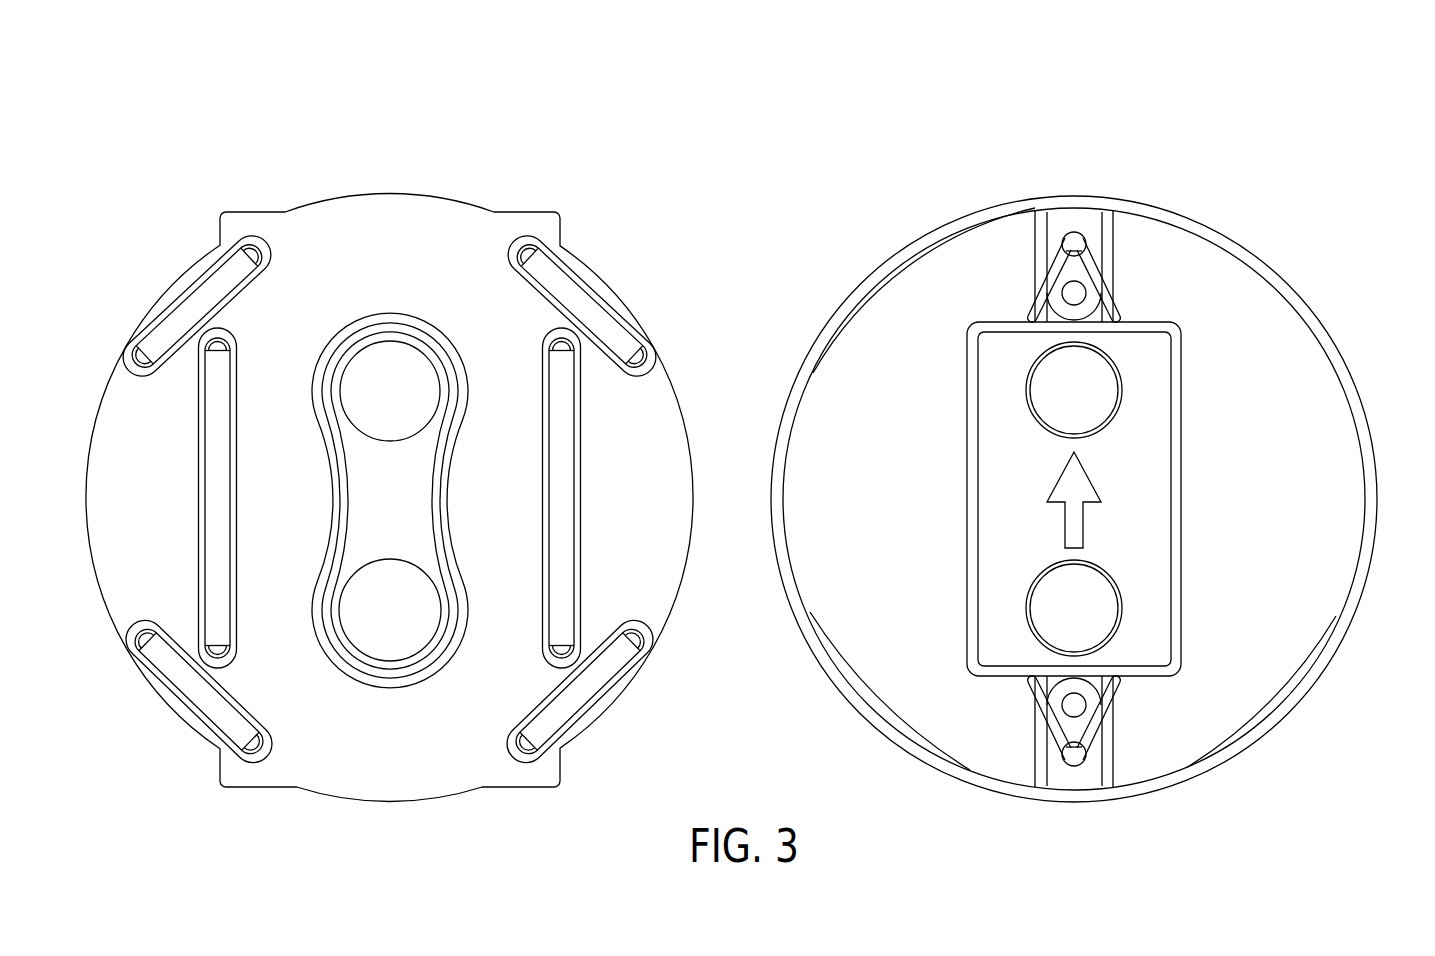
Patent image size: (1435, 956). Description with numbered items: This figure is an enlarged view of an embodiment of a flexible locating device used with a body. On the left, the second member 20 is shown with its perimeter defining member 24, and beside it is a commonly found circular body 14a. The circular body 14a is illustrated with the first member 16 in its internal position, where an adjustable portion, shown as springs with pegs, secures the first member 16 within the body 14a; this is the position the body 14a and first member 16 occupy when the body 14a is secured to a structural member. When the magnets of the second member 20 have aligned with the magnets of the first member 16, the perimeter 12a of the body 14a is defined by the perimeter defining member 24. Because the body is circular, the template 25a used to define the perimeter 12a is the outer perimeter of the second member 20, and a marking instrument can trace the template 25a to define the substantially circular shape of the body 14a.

The second member 20 is at (349, 138).
The perimeter defining member 24 is at (398, 250).
The template 25a is at (179, 280).
The perimeter 12a is at (898, 255).
The circular body 14a is at (1288, 337).
The first member 16 is at (1150, 380).